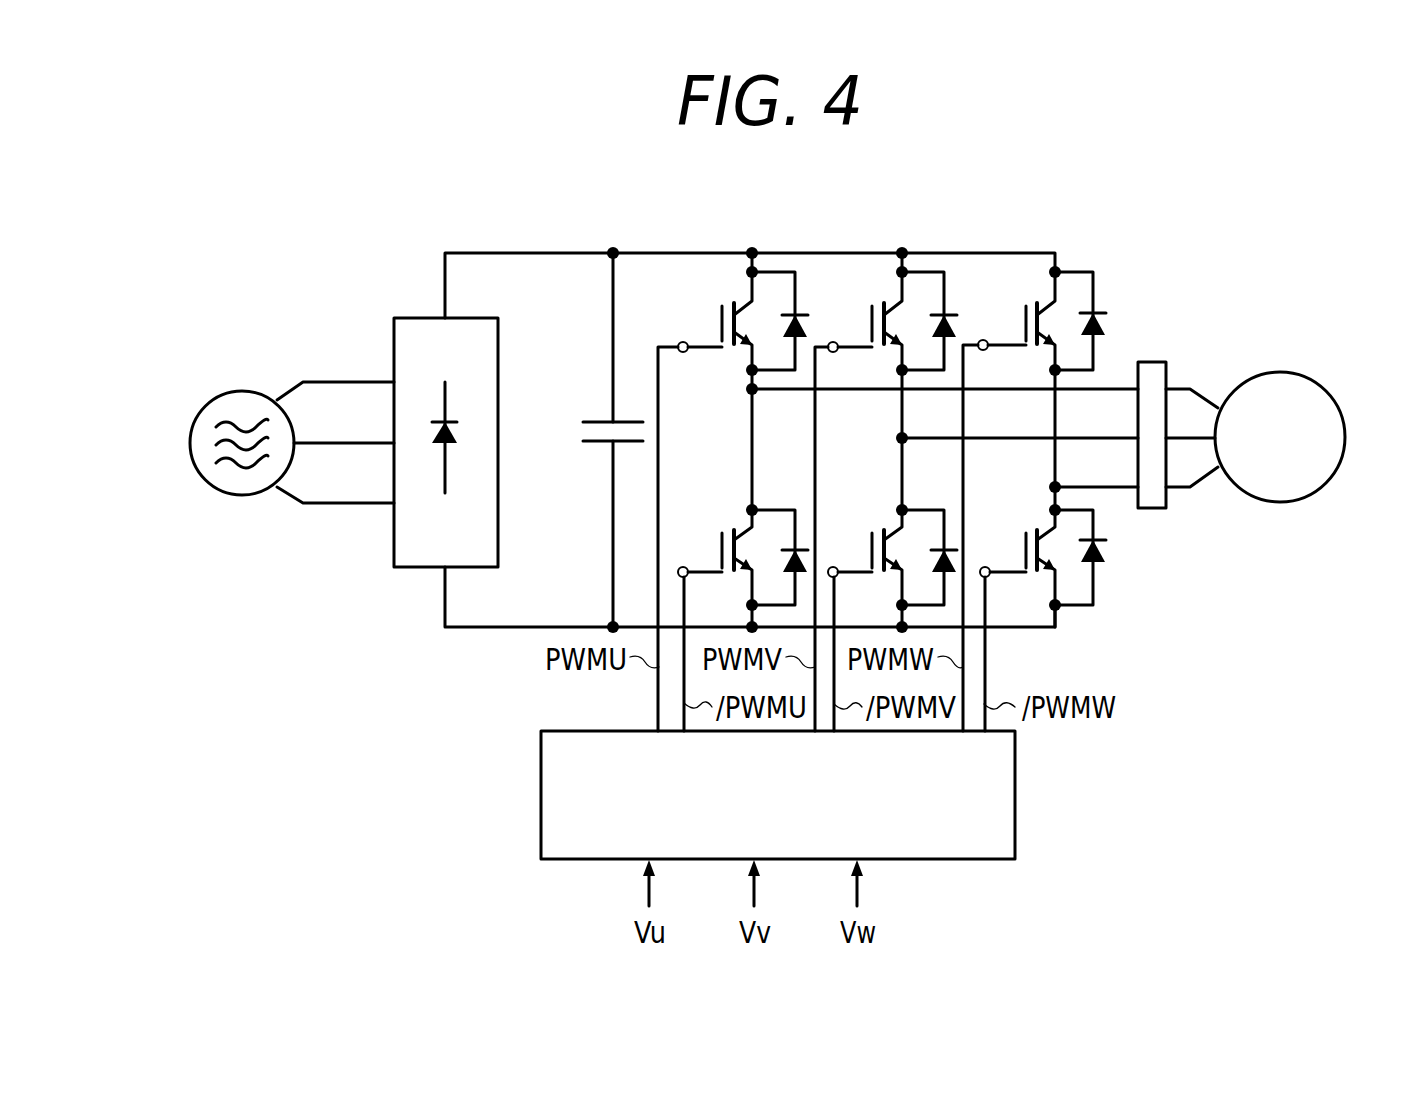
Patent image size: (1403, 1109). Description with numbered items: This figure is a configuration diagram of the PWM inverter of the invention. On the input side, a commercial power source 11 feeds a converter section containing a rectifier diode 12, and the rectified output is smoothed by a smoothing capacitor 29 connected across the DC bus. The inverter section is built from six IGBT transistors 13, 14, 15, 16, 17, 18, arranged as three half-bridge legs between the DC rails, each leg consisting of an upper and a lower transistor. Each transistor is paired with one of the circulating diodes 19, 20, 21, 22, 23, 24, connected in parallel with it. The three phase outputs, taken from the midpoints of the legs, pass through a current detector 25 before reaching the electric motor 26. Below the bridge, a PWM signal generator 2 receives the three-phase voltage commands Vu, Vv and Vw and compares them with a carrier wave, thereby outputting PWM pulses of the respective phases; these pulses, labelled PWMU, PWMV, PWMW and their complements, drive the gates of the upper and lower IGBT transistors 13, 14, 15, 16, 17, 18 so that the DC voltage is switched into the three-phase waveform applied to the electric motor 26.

The PWM signal generator 2 is at (541, 777).
The commercial power source 11 is at (228, 393).
The rectifier diode 12 is at (410, 318).
The IGBT transistor 13 is at (728, 308).
The IGBT transistor 14 is at (728, 531).
The IGBT transistor 15 is at (878, 308).
The IGBT transistor 16 is at (878, 531).
The IGBT transistor 17 is at (1030, 308).
The IGBT transistor 18 is at (1032, 529).
The circulating diode 19 is at (786, 312).
The circulating diode 20 is at (790, 548).
The circulating diode 21 is at (935, 312).
The circulating diode 22 is at (940, 548).
The circulating diode 23 is at (1100, 310).
The circulating diode 24 is at (1103, 561).
The current detector 25 is at (1155, 362).
The electric motor 26 is at (1282, 372).
The smoothing capacitor 29 is at (600, 421).